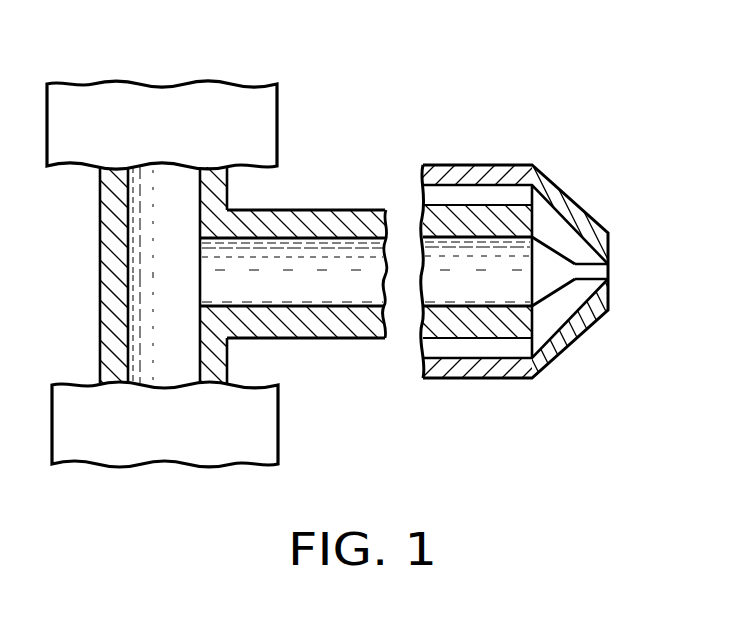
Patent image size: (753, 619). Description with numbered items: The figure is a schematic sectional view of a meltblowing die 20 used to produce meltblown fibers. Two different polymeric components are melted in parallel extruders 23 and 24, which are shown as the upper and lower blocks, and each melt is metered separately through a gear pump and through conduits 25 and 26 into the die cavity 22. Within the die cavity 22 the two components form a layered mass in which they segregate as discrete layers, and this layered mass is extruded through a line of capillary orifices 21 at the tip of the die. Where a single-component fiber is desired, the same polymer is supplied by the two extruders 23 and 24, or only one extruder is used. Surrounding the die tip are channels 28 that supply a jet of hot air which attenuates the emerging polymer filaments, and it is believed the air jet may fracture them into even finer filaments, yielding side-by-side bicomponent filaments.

The meltblowing die 20 is at (376, 309).
The capillary orifices 21 is at (612, 272).
The die cavity 22 is at (505, 292).
The extruder 23 is at (130, 92).
The extruder 24 is at (118, 455).
The conduit 25 is at (186, 218).
The conduit 26 is at (186, 342).
The channels 28 is at (563, 215).